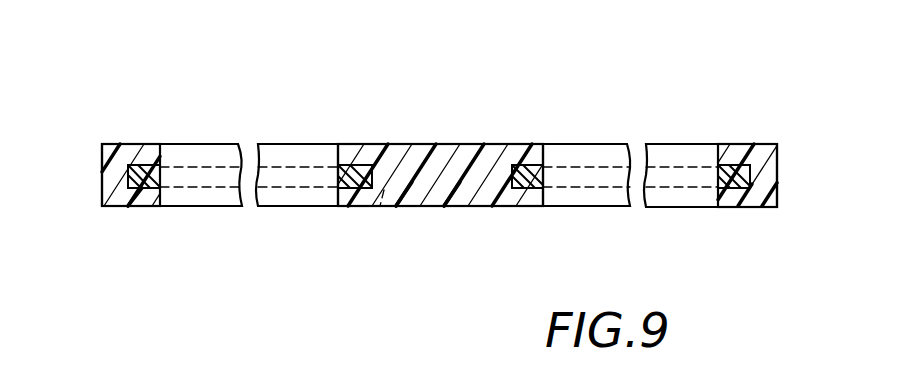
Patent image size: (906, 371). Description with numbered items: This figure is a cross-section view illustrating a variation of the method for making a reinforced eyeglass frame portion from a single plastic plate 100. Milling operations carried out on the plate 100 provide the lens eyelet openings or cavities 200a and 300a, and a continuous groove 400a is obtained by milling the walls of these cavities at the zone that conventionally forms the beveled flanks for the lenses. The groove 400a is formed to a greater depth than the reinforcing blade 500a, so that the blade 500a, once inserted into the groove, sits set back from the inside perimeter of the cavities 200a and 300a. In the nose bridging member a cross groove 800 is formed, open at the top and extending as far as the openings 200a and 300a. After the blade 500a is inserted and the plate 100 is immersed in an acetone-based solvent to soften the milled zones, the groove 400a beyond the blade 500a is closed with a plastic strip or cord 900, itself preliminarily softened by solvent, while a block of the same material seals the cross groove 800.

The plastic plate 100 is at (125, 172).
The lens eyelet opening 200a is at (291, 145).
The lens eyelet opening 300a is at (597, 150).
The continuous groove 400a is at (135, 190).
The reinforcing blade 500a is at (134, 165).
The cross groove 800 is at (384, 190).
The plastic strip or cord 900 is at (154, 165).